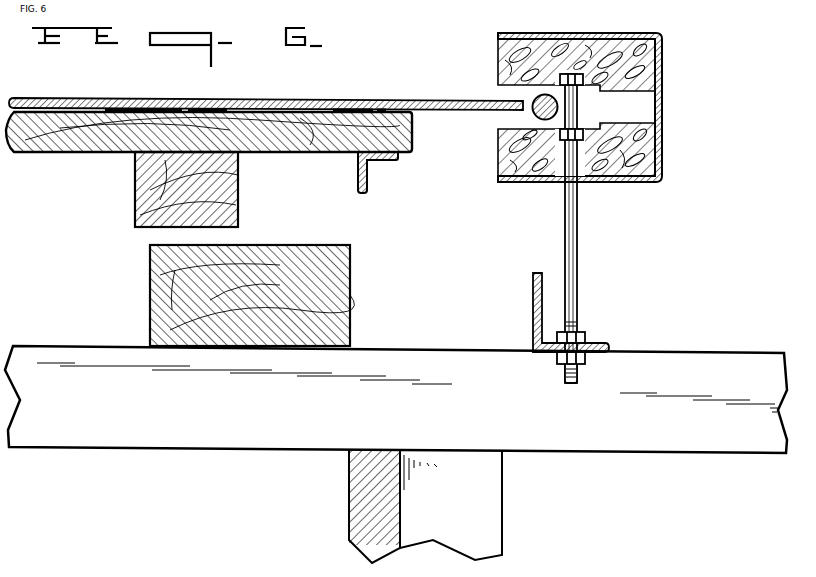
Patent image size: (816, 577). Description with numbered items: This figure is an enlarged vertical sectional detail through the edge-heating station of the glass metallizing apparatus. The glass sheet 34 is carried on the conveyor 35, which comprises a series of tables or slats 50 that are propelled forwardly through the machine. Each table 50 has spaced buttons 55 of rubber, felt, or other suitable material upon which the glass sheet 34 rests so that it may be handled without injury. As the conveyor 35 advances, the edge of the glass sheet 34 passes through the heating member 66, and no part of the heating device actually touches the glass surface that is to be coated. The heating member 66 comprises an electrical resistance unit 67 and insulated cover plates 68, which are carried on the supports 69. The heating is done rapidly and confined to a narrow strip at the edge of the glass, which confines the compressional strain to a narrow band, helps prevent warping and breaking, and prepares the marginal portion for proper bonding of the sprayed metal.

The glass sheet 34 is at (410, 101).
The conveyor 35 is at (422, 139).
The table 50 is at (105, 118).
The spaced buttons 55 is at (205, 108).
The heating member 66 is at (663, 96).
The electrical resistance unit 67 is at (516, 80).
The insulated cover plates 68 is at (552, 56).
The supports 69 is at (574, 284).